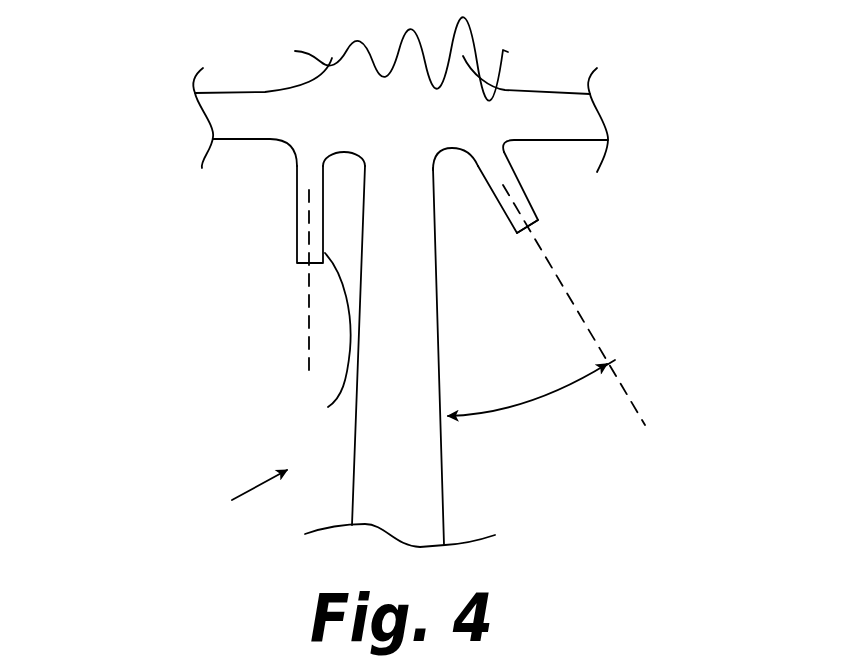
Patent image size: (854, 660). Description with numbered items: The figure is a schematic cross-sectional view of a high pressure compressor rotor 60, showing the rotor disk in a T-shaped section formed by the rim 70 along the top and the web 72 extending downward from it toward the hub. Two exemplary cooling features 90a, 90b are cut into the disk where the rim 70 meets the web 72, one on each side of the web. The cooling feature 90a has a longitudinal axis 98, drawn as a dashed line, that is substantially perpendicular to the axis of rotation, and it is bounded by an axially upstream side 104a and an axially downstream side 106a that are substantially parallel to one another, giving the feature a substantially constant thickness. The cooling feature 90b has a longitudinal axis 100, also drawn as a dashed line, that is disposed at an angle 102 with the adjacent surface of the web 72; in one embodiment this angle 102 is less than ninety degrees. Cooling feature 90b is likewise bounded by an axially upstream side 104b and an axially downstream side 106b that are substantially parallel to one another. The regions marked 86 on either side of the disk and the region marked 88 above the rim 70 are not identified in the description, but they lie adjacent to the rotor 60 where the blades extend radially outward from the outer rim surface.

The rotor 60 is at (241, 500).
The rim 70 is at (268, 93).
The web 72 is at (444, 480).
The side region 86 is at (93, 344).
The upper region 88 is at (648, 64).
The cooling feature 90a is at (296, 203).
The cooling feature 90b is at (527, 201).
The longitudinal axis 98 is at (309, 316).
The longitudinal axis 100 is at (635, 410).
The angle 102 is at (527, 402).
The axially upstream side 104a is at (296, 250).
The axially upstream side 104b is at (504, 210).
The axially downstream side 106a is at (328, 407).
The axially downstream side 106b is at (540, 218).